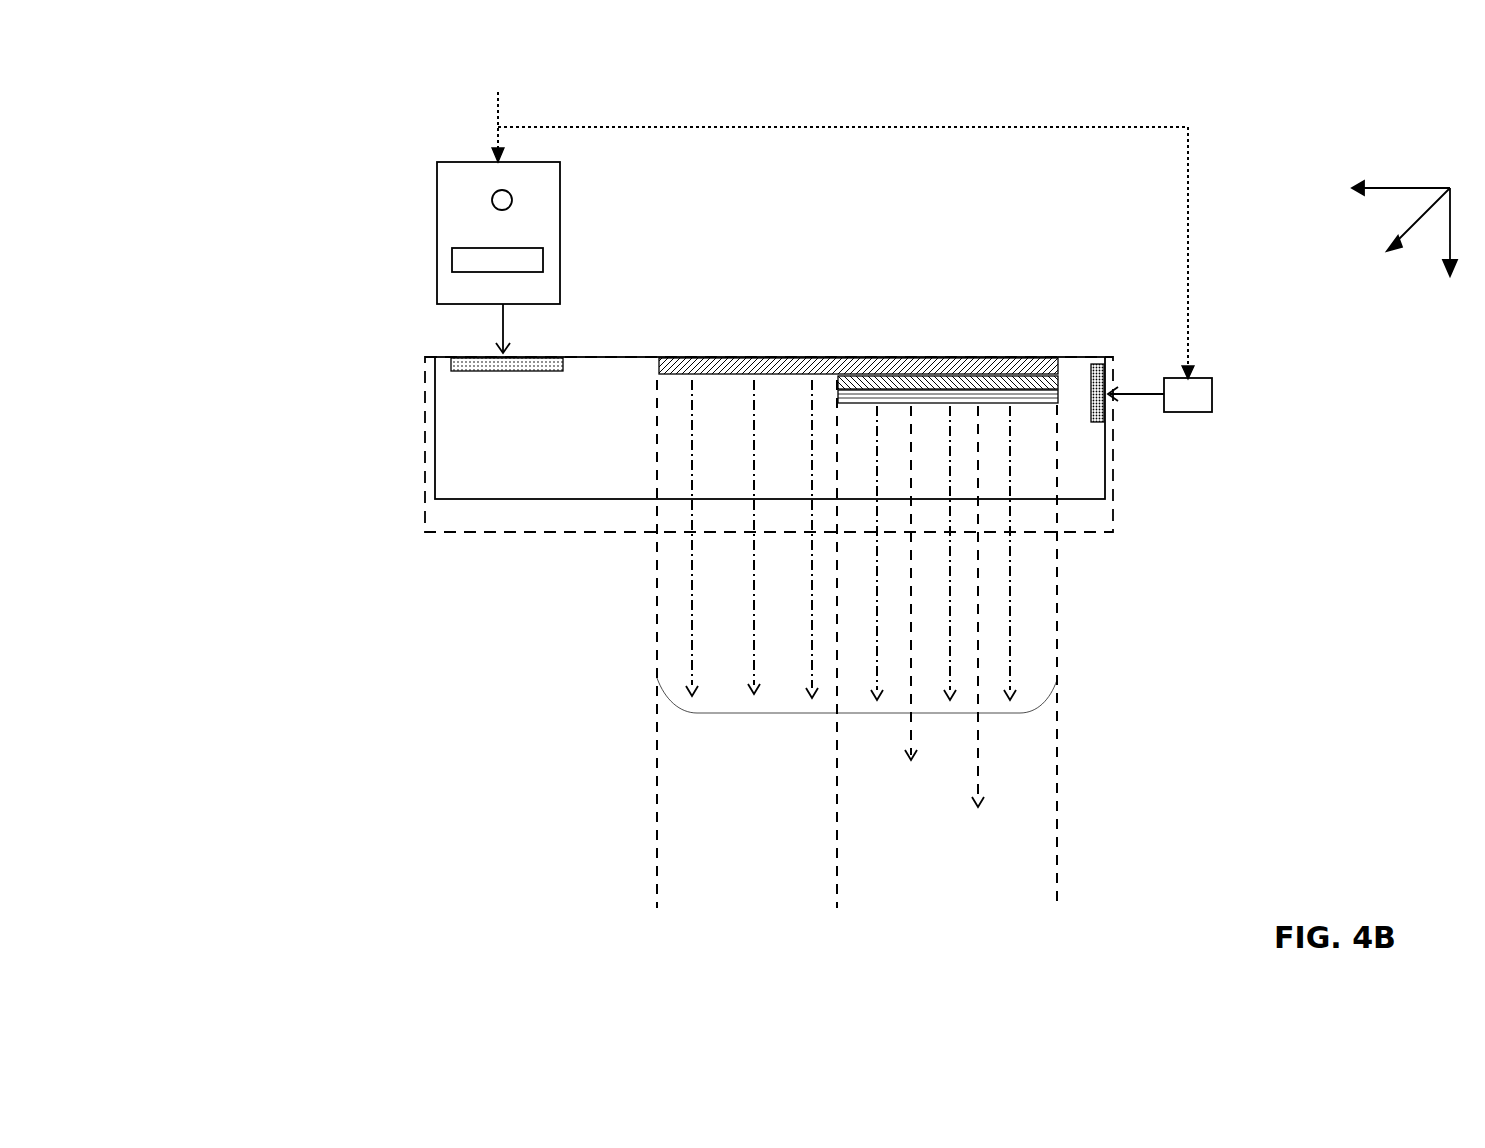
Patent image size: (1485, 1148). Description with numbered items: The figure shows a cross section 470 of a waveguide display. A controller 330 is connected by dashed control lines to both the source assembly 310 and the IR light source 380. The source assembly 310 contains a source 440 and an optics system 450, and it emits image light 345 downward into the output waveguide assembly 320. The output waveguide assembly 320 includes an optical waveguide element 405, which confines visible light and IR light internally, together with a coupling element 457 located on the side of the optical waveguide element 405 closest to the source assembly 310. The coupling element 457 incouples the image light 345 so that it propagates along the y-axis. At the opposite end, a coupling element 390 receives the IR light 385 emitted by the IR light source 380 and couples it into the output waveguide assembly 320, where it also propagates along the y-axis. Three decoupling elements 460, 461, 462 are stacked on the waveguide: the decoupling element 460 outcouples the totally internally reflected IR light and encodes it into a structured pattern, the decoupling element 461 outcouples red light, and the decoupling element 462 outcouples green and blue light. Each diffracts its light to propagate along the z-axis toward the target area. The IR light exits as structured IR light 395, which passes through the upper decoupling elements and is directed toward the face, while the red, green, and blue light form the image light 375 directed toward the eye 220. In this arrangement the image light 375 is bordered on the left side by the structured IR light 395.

The cross section 470 is at (240, 114).
The controller 330 is at (825, 209).
The source assembly 310 is at (437, 166).
The source 440 is at (512, 199).
The optics system 450 is at (543, 260).
The image light 345 is at (503, 318).
The output waveguide assembly 320 is at (425, 352).
The optical waveguide element 405 is at (448, 400).
The coupling element 457 is at (540, 370).
The decoupling element 462 is at (855, 388).
The decoupling element 461 is at (997, 386).
The decoupling element 460 is at (960, 374).
The coupling element 390 is at (1095, 364).
The IR light 385 is at (1136, 394).
The IR light source 380 is at (1212, 392).
The structured IR light 395 is at (784, 713).
The image light 375 is at (911, 732).
The eye 220 is at (947, 825).